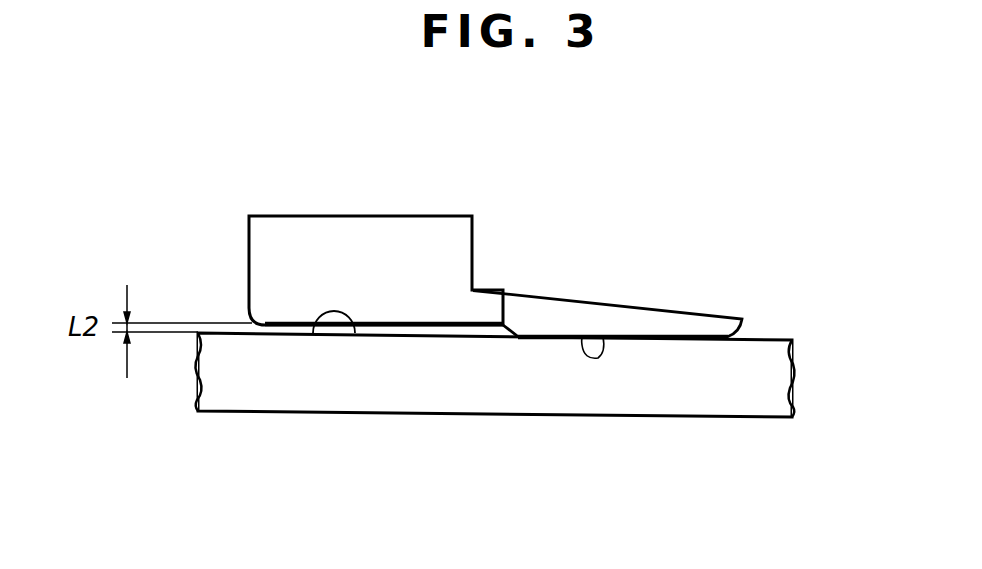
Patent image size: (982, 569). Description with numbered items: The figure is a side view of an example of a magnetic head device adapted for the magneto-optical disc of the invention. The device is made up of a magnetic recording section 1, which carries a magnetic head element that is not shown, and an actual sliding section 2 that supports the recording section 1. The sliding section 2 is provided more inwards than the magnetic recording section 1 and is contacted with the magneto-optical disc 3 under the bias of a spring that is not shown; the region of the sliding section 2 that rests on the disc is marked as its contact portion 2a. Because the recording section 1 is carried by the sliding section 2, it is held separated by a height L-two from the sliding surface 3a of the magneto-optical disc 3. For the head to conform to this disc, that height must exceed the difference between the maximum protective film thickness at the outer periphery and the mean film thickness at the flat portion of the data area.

The magnetic recording section 1 is at (456, 253).
The sliding section 2 is at (668, 320).
The contact portion of wedge 2a is at (603, 337).
The magneto-optical disc 3 is at (765, 370).
The sliding surface 3a is at (356, 330).